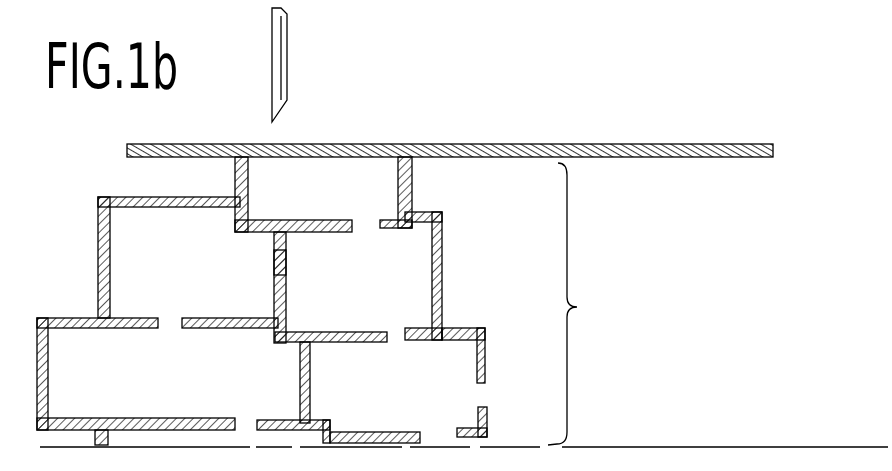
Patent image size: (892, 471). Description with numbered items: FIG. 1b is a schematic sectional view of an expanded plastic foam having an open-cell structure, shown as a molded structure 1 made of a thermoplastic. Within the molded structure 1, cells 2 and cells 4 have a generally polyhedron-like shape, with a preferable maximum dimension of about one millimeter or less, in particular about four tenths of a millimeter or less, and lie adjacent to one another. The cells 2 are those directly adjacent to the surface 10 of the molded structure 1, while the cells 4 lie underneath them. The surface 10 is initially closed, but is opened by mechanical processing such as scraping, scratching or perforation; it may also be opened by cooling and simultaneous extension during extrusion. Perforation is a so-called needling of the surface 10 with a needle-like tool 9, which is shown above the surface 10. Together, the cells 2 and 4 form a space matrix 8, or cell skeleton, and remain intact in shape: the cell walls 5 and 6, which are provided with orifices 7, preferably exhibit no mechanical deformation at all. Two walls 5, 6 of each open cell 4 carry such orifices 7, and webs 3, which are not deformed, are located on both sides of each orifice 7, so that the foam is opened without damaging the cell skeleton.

The molded structure 1 is at (590, 142).
The cells 2 is at (413, 190).
The webs 3 is at (274, 260).
The cells 4 is at (48, 320).
The cell wall 5 is at (286, 262).
The cell wall 6 is at (372, 430).
The orifices 7 is at (286, 304).
The space matrix 8 is at (580, 307).
The needle-like tool 9 is at (288, 68).
The surface 10 is at (472, 143).